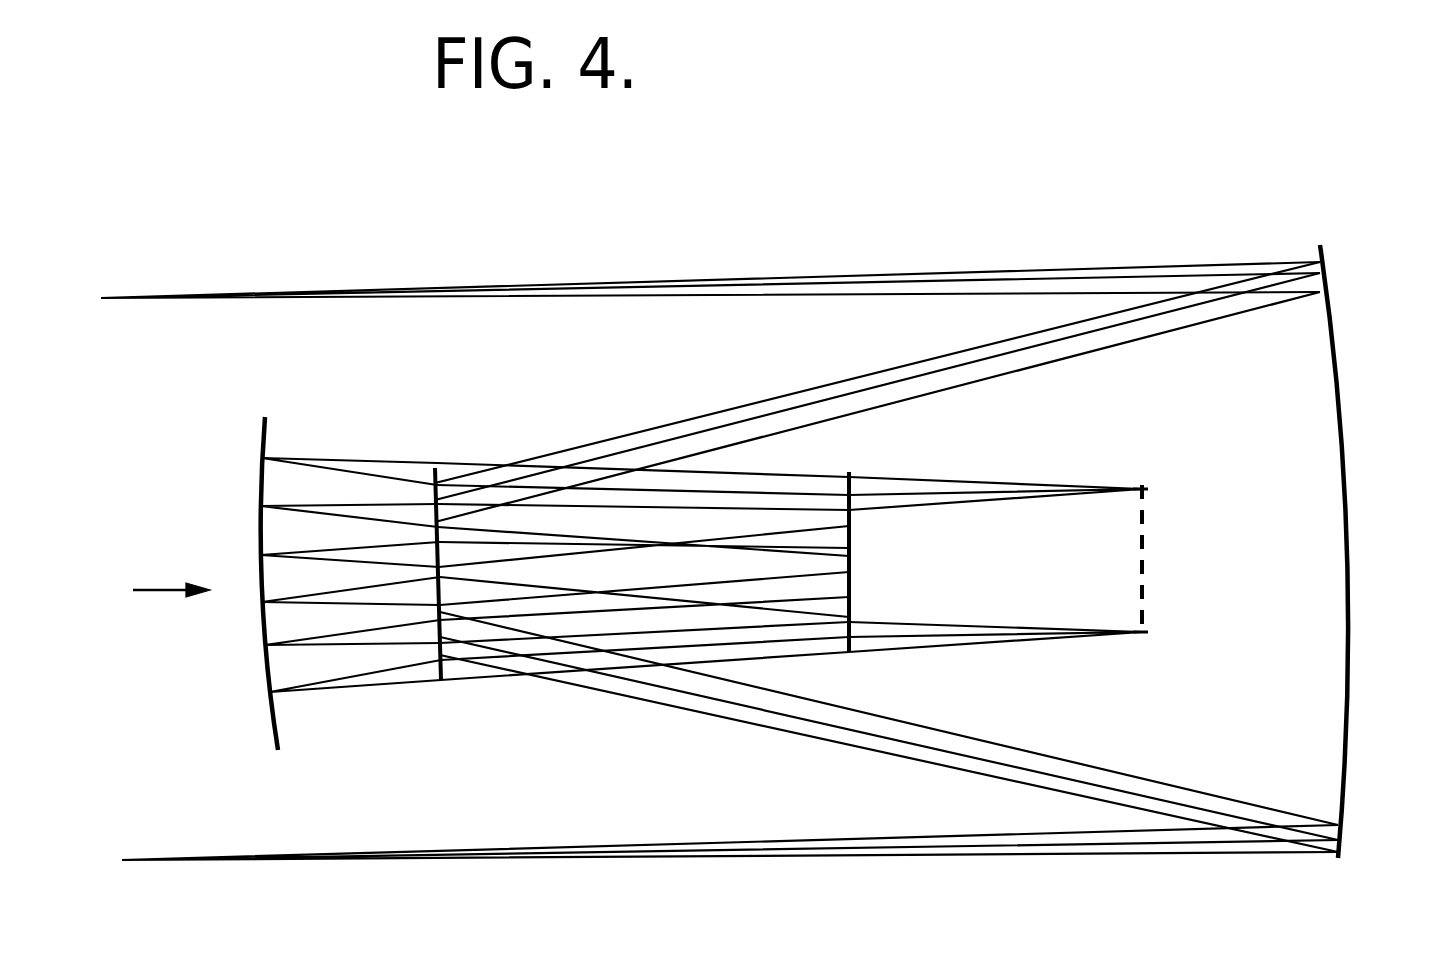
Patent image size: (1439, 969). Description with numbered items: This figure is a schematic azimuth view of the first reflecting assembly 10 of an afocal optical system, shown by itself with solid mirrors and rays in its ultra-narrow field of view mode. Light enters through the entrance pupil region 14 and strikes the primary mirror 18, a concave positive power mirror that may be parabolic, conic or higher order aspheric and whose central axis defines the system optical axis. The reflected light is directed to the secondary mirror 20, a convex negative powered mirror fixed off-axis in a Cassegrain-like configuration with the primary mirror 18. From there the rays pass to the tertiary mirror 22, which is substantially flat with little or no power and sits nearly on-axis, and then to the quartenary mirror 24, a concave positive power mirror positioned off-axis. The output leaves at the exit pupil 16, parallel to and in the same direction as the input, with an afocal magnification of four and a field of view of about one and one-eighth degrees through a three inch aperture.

The first reflecting assembly 10 is at (655, 281).
The entrance pupil region 14 is at (150, 592).
The exit pupil 16 is at (1146, 543).
The primary mirror 18 is at (1330, 316).
The secondary mirror 20 is at (441, 677).
The tertiary mirror 22 is at (870, 456).
The quartenary mirror 24 is at (268, 703).